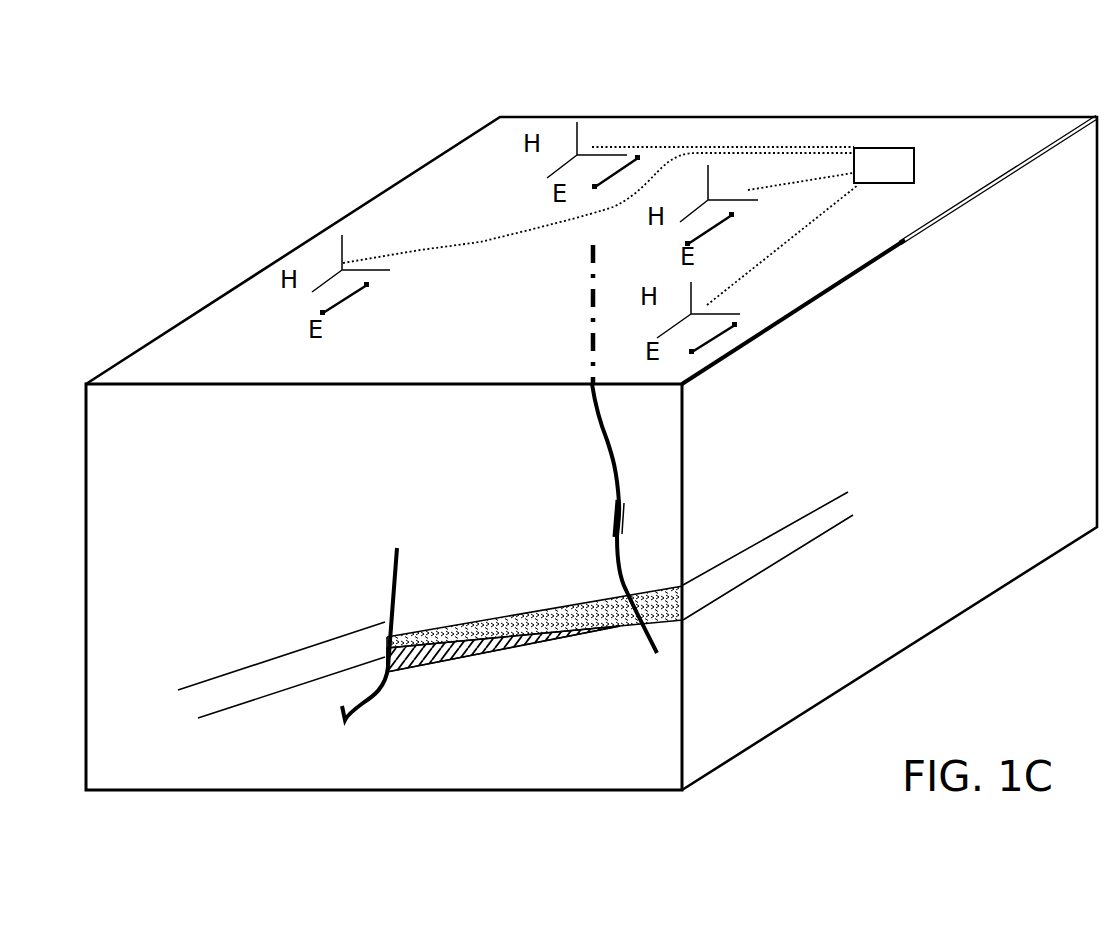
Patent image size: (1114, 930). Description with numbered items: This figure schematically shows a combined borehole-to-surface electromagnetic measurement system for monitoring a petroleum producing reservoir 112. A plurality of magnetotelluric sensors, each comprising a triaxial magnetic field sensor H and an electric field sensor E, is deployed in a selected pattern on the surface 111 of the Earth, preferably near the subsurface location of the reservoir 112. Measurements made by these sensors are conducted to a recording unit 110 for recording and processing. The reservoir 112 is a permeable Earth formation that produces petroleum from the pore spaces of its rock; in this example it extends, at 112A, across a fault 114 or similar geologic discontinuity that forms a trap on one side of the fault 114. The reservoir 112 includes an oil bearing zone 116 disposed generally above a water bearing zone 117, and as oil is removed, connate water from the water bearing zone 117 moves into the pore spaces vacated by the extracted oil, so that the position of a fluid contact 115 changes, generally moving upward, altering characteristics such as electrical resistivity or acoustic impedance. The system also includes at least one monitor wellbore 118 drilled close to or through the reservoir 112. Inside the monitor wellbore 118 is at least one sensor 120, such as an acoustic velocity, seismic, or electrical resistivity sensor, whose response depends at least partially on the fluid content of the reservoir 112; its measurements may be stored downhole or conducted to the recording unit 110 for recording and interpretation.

The recording unit 110 is at (895, 155).
The surface of the Earth 111 is at (430, 200).
The petroleum producing reservoir 112 is at (475, 633).
The reservoir extension 112A is at (278, 677).
The fault 114 is at (388, 608).
The fluid contact 115 is at (435, 662).
The oil bearing zone 116 is at (565, 622).
The water bearing zone 117 is at (480, 658).
The monitor wellbore 118 is at (603, 442).
The sensor 120 is at (627, 517).